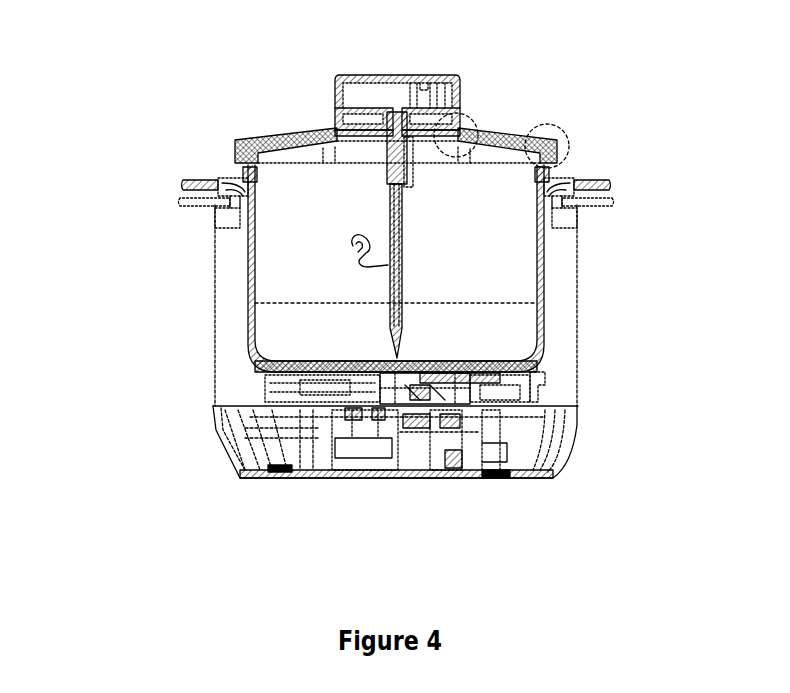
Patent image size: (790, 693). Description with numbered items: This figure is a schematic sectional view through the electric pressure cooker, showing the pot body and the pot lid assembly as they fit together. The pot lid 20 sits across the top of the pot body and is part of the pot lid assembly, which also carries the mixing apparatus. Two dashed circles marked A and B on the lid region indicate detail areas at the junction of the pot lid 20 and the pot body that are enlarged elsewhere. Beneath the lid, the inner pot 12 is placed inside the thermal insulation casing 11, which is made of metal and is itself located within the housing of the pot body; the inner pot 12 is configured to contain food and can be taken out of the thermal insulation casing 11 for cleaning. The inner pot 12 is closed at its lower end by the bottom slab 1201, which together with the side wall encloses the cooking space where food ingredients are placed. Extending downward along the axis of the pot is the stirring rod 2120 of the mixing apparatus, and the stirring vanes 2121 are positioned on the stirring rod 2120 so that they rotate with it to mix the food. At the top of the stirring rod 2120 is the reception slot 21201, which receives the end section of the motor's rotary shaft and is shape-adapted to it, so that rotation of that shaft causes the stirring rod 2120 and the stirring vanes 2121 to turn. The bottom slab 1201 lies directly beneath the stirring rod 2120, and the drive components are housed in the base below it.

The pot lid 20 is at (298, 128).
The detail region A is at (462, 108).
The detail region B is at (558, 131).
The reception slot 21201 is at (389, 186).
The stirring rod 2120 is at (399, 268).
The stirring vanes 2121 is at (362, 262).
The thermal insulation casing 11 is at (257, 368).
The inner pot 12 is at (543, 292).
The bottom slab 1201 is at (377, 363).